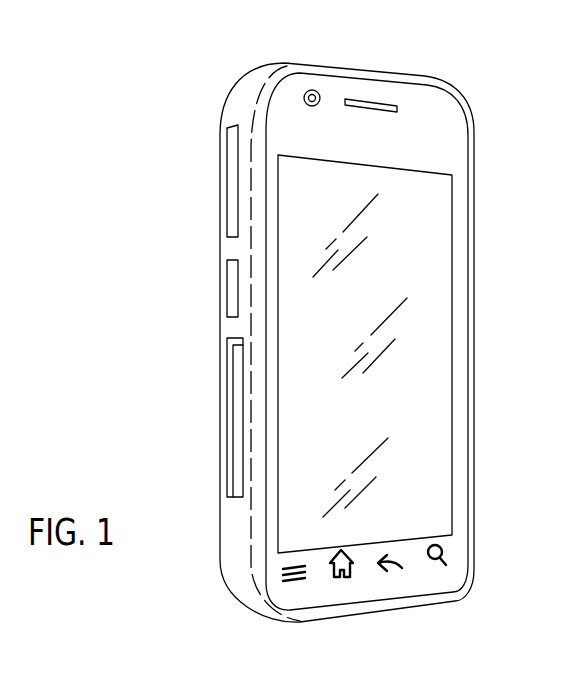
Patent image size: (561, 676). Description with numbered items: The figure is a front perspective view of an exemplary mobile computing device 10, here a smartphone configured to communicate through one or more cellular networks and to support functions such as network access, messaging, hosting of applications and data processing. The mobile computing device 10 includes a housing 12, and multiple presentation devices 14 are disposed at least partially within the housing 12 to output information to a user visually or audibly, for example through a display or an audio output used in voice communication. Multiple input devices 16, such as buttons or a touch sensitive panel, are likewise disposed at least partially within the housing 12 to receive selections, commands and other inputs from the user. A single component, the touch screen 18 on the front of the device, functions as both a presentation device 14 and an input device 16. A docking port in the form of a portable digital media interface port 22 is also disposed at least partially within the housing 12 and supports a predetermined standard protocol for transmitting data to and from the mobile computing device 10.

The mobile computing device 10 is at (226, 46).
The housing 12 is at (243, 593).
The presentation device 14 is at (368, 103).
The input device 16 is at (230, 210).
The touch screen 18 is at (440, 455).
The portable digital media interface (PDMI) port 22 is at (230, 402).